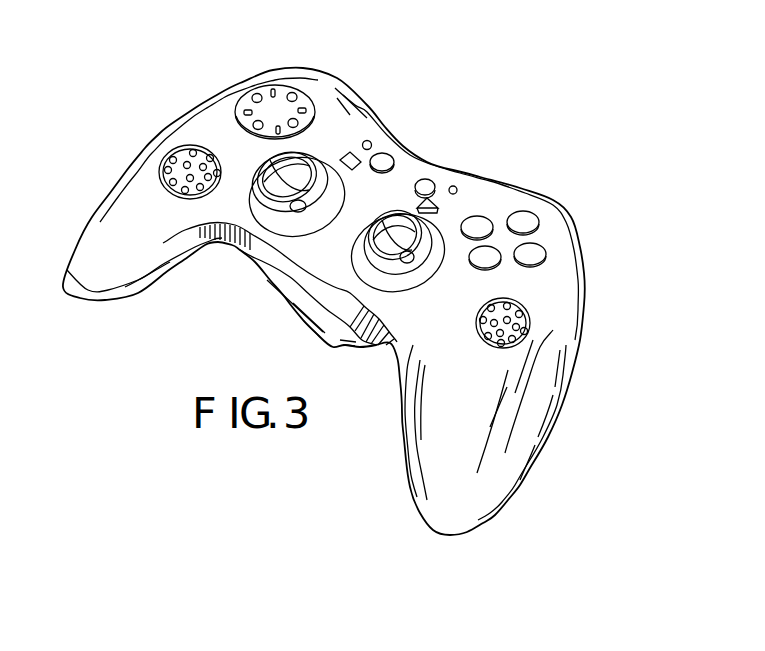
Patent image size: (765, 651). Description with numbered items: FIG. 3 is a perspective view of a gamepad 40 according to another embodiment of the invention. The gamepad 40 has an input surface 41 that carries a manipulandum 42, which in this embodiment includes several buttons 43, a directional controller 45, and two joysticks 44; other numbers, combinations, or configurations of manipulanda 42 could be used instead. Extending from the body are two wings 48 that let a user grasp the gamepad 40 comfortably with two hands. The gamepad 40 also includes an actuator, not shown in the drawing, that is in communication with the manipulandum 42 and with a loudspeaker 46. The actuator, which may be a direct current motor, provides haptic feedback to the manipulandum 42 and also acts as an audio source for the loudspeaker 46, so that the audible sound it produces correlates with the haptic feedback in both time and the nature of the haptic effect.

The gamepad 40 is at (473, 97).
The input surface 41 is at (563, 237).
The manipulandum 42 is at (278, 183).
The buttons 43 is at (525, 216).
The joysticks 44 is at (383, 242).
The directional controller 45 is at (282, 88).
The loudspeaker 46 is at (181, 160).
The wings 48 is at (103, 197).